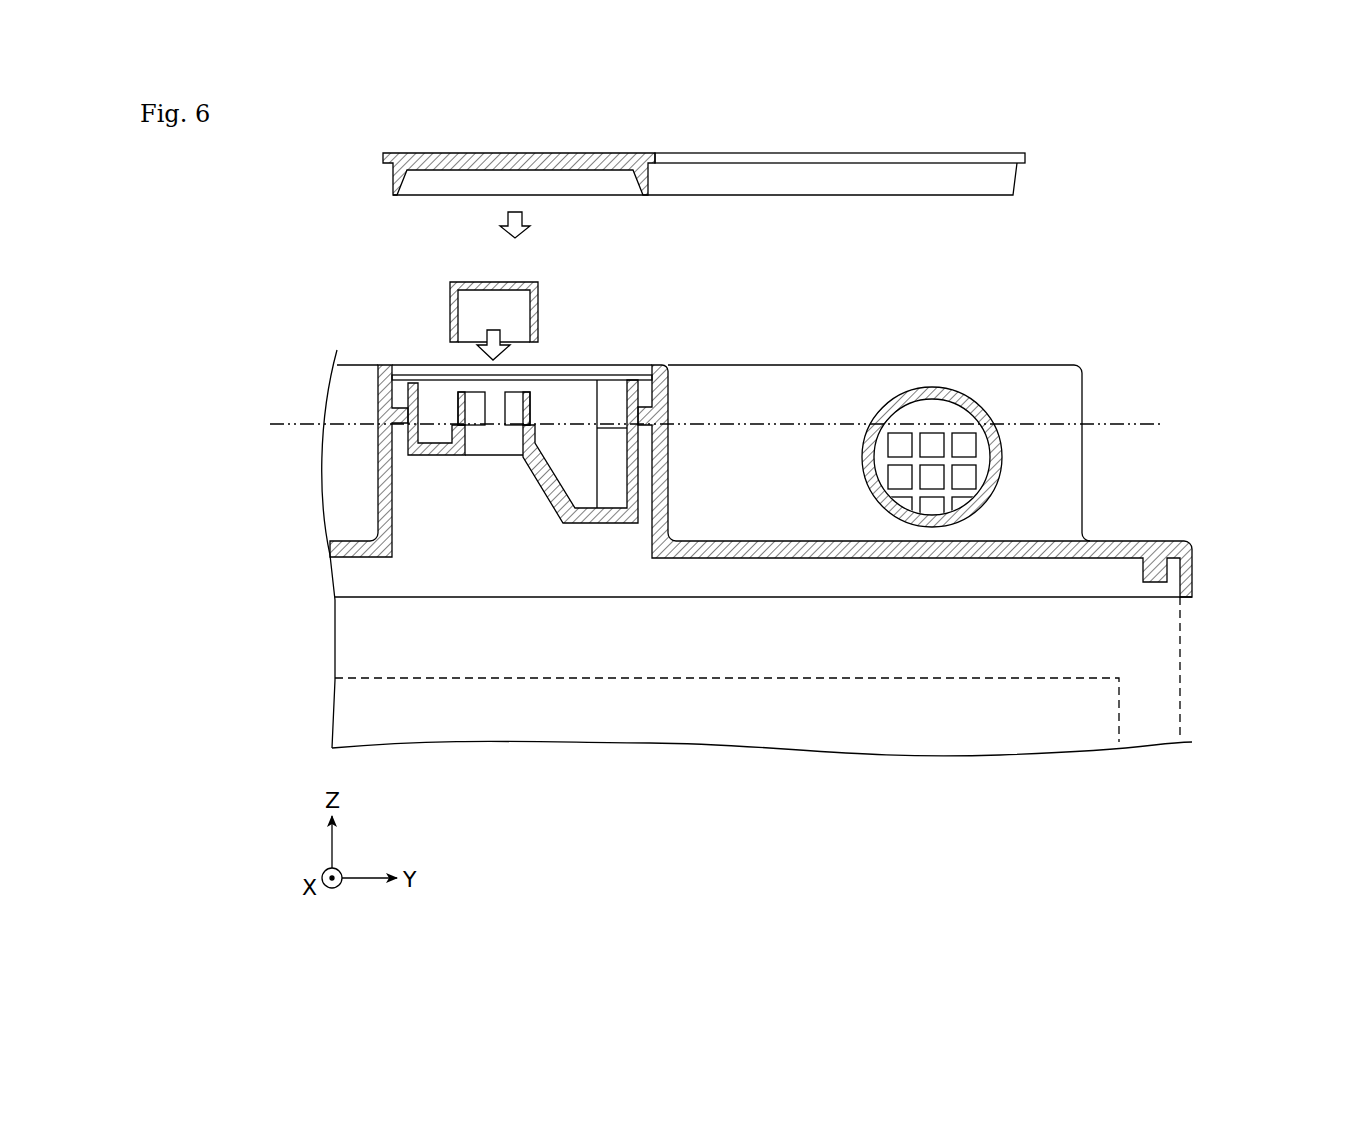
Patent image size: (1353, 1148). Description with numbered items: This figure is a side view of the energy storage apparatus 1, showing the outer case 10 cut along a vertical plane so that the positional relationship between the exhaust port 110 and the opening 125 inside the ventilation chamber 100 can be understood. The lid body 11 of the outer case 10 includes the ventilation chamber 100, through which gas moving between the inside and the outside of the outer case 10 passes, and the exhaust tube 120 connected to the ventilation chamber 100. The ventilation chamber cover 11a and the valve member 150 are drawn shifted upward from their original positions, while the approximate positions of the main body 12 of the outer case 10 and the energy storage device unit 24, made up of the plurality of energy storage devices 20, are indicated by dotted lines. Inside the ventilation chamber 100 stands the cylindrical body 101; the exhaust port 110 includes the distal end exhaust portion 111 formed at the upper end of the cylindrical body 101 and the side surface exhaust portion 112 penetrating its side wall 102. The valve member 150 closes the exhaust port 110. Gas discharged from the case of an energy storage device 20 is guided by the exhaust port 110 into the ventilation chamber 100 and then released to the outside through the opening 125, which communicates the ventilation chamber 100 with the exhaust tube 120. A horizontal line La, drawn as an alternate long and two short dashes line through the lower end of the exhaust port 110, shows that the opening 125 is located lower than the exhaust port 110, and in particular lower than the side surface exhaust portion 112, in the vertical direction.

The energy storage apparatus 1 is at (1113, 260).
The outer case 10 is at (1155, 457).
The lid body 11 is at (1048, 363).
The ventilation chamber cover 11a is at (853, 152).
The main body 12 is at (1180, 650).
The energy storage device 20 is at (748, 734).
The energy storage device unit 24 is at (1052, 665).
The ventilation chamber 100 is at (658, 310).
The cylindrical body 101 is at (449, 405).
The side wall 102 is at (476, 433).
The exhaust port 110 is at (652, 280).
The distal end exhaust portion 111 is at (495, 395).
The side surface exhaust portion 112 is at (527, 412).
The exhaust tube 120 is at (898, 395).
The opening 125 is at (938, 443).
The valve member 150 is at (472, 282).
The alternate long and two short dashes line La is at (826, 423).